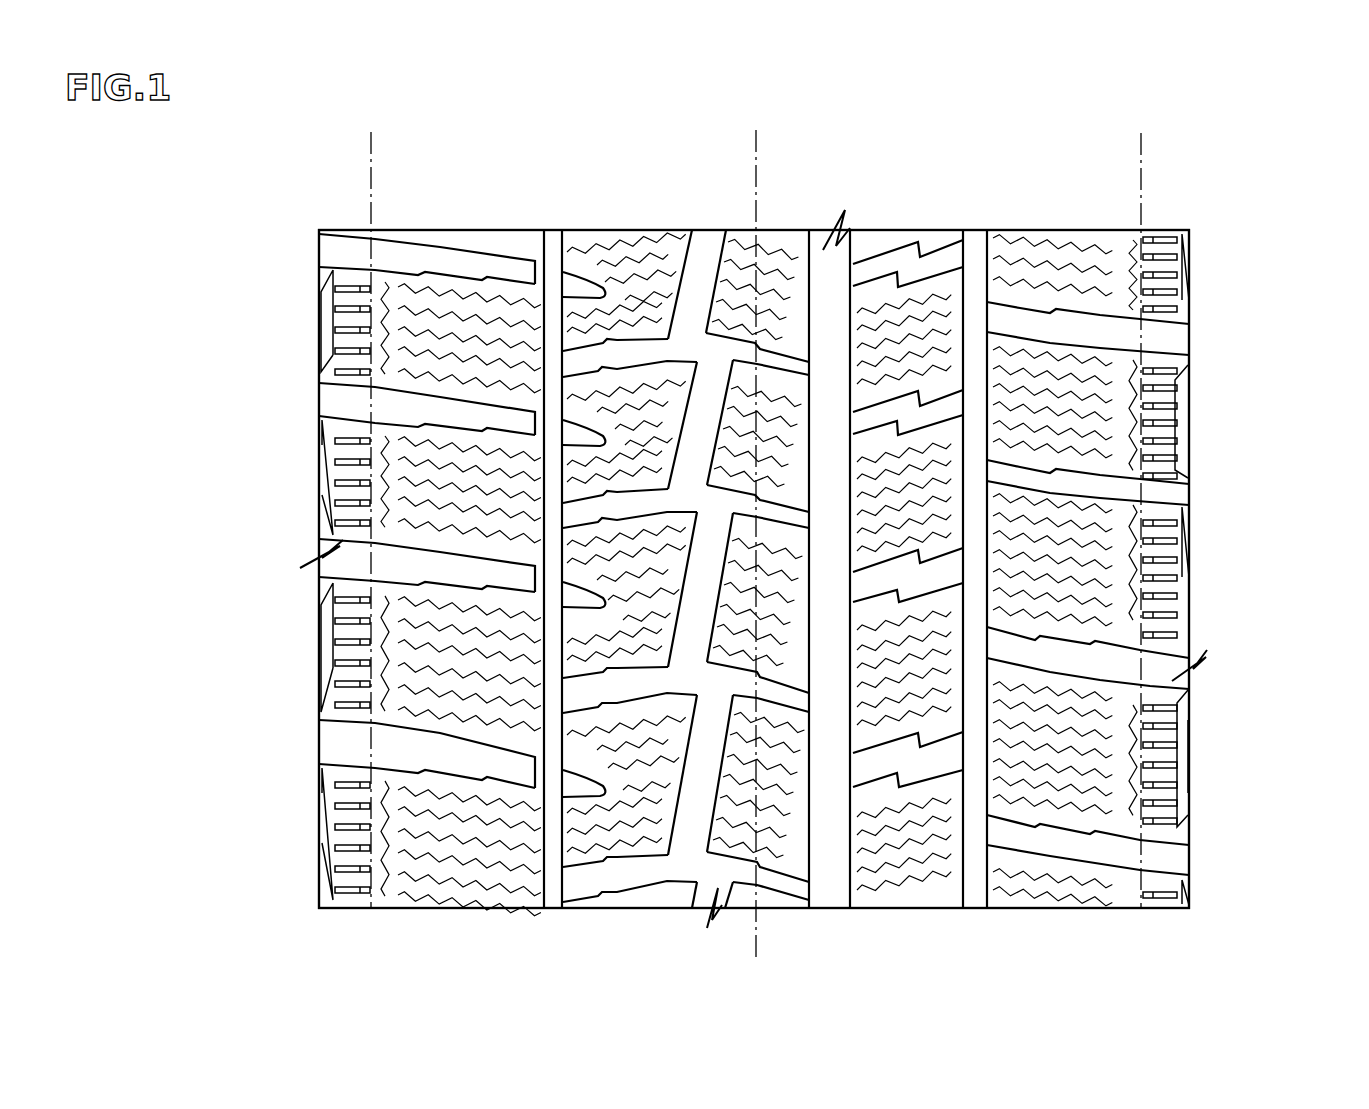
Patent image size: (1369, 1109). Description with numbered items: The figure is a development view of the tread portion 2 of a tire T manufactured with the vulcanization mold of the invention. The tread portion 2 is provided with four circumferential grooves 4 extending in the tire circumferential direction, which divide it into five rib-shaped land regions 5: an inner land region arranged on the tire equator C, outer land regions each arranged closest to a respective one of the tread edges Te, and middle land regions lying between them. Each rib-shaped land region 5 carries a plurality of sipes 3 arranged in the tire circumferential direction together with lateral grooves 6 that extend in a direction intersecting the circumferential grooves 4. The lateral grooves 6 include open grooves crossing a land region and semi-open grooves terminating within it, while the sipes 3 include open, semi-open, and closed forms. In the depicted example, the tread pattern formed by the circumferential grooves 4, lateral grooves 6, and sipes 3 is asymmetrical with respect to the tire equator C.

The tread portion 2 is at (803, 533).
The tire T is at (827, 554).
The tread edges Te is at (368, 227).
The tire equator C is at (755, 535).
The sipes 3 is at (930, 613).
The circumferential grooves 4 is at (556, 250).
The rib-shaped land regions 5 is at (750, 550).
The lateral grooves 6 is at (465, 757).